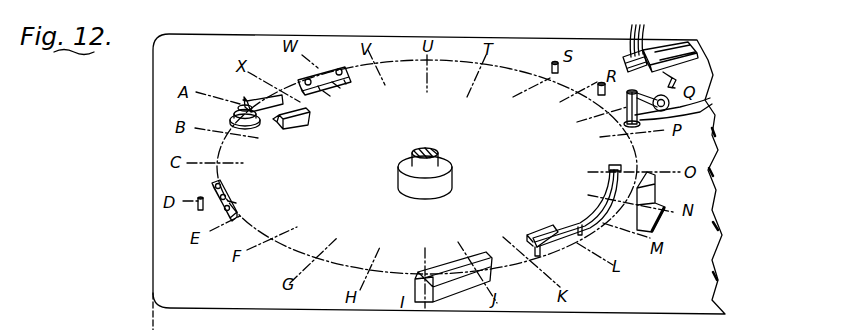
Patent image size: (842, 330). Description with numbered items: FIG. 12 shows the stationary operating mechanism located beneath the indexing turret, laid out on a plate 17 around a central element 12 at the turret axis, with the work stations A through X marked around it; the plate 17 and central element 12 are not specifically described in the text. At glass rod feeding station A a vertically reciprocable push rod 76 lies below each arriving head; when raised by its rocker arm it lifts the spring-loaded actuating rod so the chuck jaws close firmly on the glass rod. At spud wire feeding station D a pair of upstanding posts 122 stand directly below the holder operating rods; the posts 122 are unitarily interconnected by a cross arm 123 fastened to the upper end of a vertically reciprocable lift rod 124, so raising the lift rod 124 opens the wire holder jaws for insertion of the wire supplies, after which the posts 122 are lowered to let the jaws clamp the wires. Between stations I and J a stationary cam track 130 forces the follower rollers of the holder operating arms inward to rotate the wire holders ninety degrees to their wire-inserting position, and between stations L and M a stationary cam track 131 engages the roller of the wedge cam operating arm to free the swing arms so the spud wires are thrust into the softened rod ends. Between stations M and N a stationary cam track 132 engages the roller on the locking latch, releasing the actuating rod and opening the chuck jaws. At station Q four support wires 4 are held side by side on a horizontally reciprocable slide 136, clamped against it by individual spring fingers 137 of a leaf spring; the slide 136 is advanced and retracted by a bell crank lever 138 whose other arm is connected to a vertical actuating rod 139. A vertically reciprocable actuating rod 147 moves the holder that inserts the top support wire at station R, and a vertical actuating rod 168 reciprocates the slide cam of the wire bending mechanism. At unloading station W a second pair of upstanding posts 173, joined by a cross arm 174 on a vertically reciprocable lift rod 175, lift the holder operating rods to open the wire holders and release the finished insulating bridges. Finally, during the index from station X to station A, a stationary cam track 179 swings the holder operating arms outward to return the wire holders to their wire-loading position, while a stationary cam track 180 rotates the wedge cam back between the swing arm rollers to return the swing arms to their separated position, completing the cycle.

The support wires 4 is at (622, 62).
The central hub 12 is at (440, 156).
The base plate 17 is at (162, 277).
The push rod 76 is at (238, 107).
The upstanding posts 122 is at (218, 184).
The cross arm 123 is at (225, 195).
The lift rod 124 is at (232, 202).
The stationary cam track 130 is at (458, 270).
The stationary cam track 131 is at (580, 212).
The stationary cam track 132 is at (643, 168).
The slide 136 is at (700, 55).
The spring fingers 137 is at (639, 34).
The bell crank lever 138 is at (702, 107).
The vertical actuating rod 139 is at (705, 125).
The actuating rod 147 is at (599, 87).
The vertical actuating rod 168 is at (552, 67).
The upstanding posts 173 is at (344, 55).
The cross arm 174 is at (343, 84).
The lift rod 175 is at (331, 93).
The stationary cam track 179 is at (252, 98).
The stationary cam track 180 is at (313, 106).